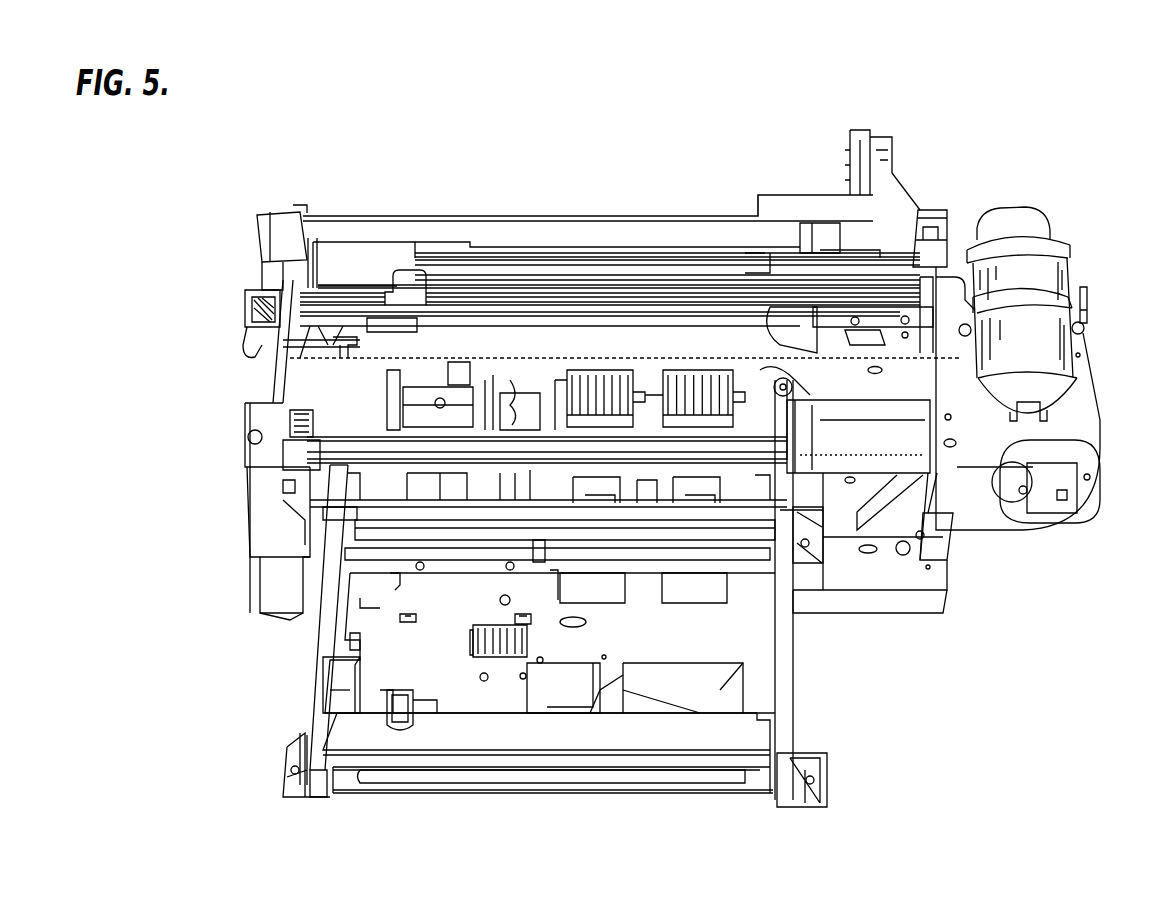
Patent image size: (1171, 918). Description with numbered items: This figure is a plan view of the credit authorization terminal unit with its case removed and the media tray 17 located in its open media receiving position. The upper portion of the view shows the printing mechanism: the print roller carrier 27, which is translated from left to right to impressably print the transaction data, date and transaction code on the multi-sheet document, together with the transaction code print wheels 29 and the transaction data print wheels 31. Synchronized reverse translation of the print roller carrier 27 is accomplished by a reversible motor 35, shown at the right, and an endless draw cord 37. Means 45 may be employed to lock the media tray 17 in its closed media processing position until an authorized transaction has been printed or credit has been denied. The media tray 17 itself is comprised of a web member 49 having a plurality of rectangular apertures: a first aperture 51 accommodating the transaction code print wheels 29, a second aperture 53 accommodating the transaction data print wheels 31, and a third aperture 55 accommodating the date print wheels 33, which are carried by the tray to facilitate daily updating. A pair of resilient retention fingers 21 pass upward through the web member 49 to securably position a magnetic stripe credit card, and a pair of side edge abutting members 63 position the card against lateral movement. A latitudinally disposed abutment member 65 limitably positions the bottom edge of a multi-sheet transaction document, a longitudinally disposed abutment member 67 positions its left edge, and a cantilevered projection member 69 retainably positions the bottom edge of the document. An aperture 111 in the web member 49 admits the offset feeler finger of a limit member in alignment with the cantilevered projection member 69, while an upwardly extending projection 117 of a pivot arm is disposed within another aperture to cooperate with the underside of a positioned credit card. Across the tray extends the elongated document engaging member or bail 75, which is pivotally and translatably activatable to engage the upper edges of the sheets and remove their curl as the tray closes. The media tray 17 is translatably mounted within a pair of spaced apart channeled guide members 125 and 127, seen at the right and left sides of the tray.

The media tray 17 is at (548, 756).
The resilient retention fingers 21 is at (407, 620).
The print roller carrier 27 is at (858, 436).
The transaction code print wheels 29 is at (700, 390).
The transaction data print wheels 31 is at (583, 377).
The date print wheels 33 is at (493, 637).
The reversible motor 35 is at (1085, 414).
The endless draw cord 37 is at (453, 355).
The locking means 45 is at (507, 390).
The web member 49 is at (733, 645).
The first aperture 51 is at (693, 601).
The second aperture 53 is at (607, 604).
The third aperture 55 is at (473, 637).
The side edge abutting members 63 is at (400, 578).
The latitudinally disposed abutment member 65 is at (455, 713).
The longitudinally disposed abutment member 67 is at (350, 685).
The cantilevered projection member 69 is at (400, 703).
The bail 75 is at (600, 541).
The aperture 111 is at (368, 654).
The upwardly extending projection 117 is at (542, 557).
The channeled guide member 125 is at (787, 648).
The channeled guide member 127 is at (307, 670).